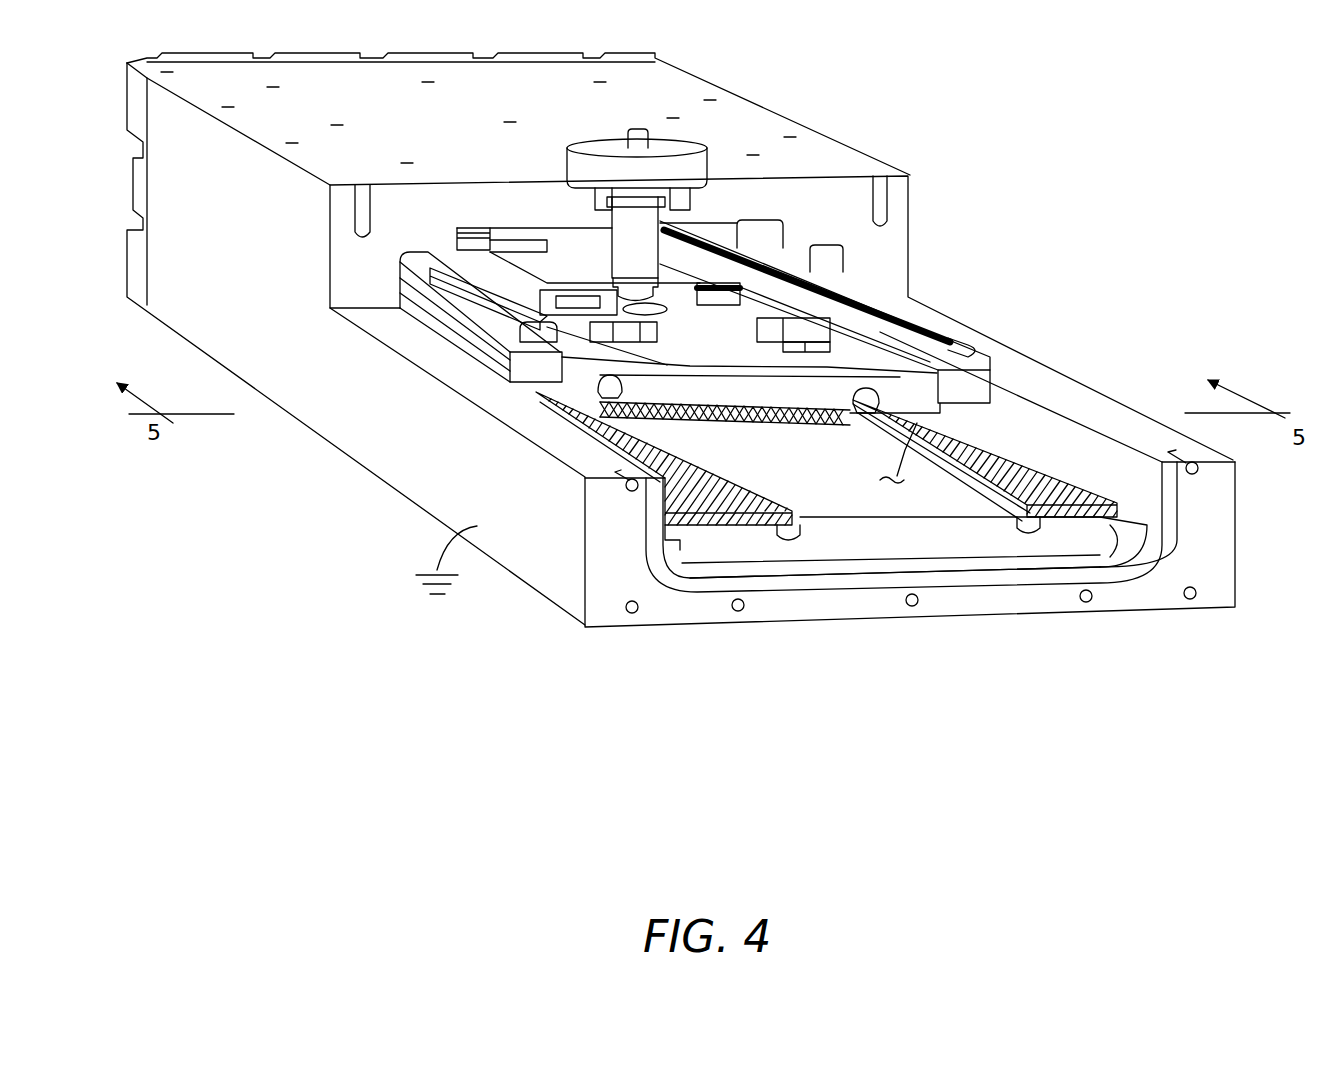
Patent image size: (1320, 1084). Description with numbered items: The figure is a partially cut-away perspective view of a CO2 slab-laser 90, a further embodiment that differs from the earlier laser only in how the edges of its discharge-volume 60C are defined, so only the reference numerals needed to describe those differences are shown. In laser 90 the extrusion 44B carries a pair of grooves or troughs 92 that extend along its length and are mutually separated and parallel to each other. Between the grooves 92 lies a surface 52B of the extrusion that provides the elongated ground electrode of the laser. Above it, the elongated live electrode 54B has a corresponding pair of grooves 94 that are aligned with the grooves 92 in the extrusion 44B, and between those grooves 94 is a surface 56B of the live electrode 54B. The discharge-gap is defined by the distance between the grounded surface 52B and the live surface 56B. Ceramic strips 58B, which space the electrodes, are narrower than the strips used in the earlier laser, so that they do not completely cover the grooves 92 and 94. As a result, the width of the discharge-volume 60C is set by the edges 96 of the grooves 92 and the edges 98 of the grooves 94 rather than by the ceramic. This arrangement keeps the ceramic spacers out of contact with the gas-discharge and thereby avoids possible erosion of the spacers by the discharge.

The CO2 slab-laser 90 is at (208, 636).
The extrusion 44B is at (339, 396).
The surface 52B is at (905, 418).
The elongated live electrode 54B is at (625, 372).
The surface 56B is at (775, 403).
The ceramic strips 58B is at (708, 527).
The discharge-volume 60C is at (745, 368).
The grooves 92 is at (790, 542).
The grooves 94 is at (871, 383).
The edges 96 is at (800, 530).
The edges 98 is at (737, 345).